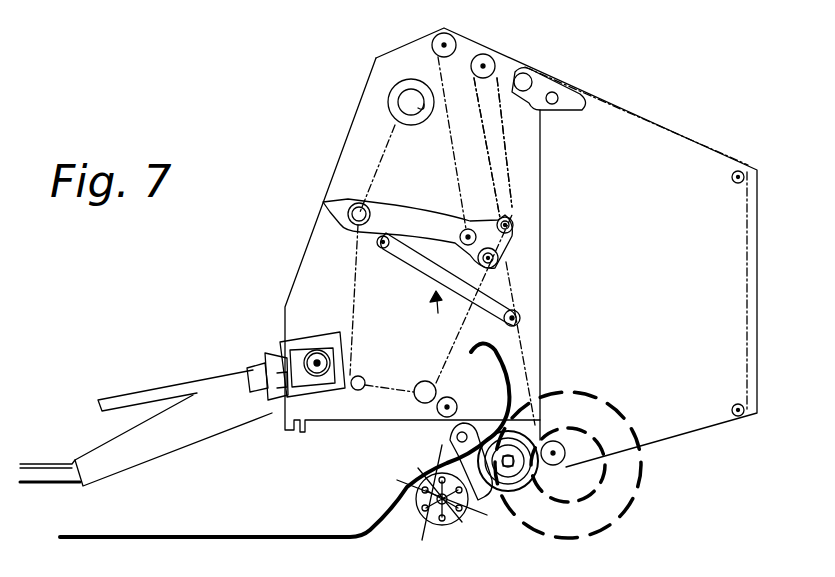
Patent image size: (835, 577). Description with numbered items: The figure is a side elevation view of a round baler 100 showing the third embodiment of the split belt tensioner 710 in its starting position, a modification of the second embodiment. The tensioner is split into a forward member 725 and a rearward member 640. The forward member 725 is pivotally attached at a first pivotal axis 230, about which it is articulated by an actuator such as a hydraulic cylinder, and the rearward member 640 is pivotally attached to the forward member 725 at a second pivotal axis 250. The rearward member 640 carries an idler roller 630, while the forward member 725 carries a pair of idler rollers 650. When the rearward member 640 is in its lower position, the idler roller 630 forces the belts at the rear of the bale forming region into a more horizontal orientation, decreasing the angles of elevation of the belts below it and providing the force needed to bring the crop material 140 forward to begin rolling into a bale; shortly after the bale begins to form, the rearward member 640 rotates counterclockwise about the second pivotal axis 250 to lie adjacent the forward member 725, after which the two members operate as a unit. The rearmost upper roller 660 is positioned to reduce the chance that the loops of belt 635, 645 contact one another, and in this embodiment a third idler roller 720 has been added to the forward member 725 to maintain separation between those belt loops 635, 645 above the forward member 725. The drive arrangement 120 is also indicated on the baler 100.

The baler 100 is at (705, 490).
The drive gearbox 120 is at (435, 129).
The crop material 140 is at (243, 528).
The first pivotal axis 230 is at (347, 210).
The second pivotal axis 250 is at (372, 250).
The idler roller 630 is at (520, 316).
The belt loop 635 is at (503, 128).
The rearward member 640 is at (434, 268).
The belt loop 645 is at (501, 146).
The idler rollers 650 is at (477, 236).
The rearmost upper roller 660 is at (485, 66).
The split belt tensioner 710 is at (436, 315).
The third idler roller 720 is at (507, 217).
The forward member 725 is at (422, 229).